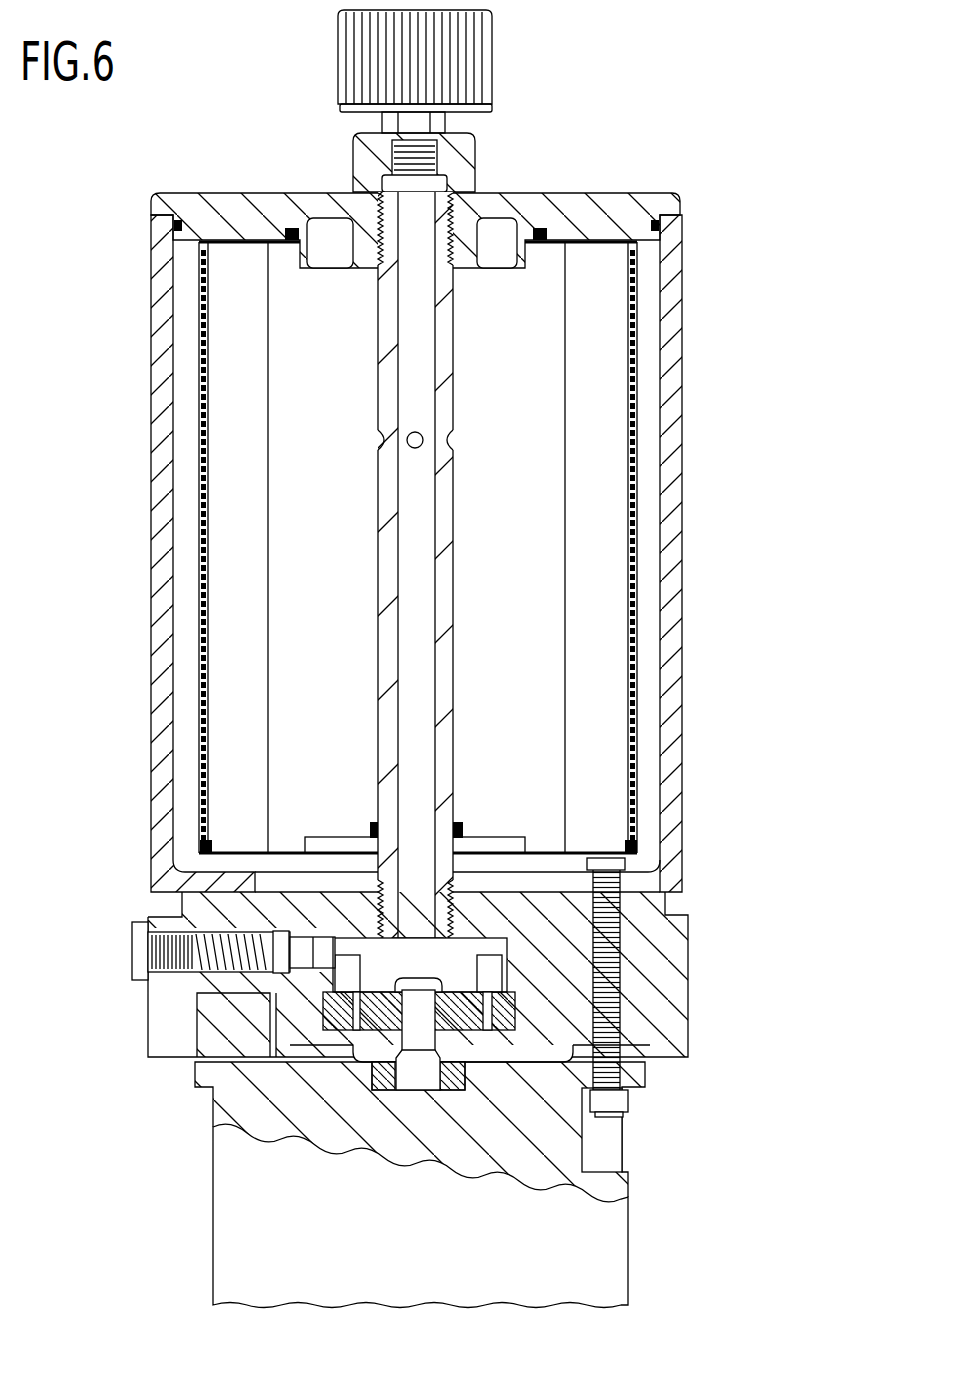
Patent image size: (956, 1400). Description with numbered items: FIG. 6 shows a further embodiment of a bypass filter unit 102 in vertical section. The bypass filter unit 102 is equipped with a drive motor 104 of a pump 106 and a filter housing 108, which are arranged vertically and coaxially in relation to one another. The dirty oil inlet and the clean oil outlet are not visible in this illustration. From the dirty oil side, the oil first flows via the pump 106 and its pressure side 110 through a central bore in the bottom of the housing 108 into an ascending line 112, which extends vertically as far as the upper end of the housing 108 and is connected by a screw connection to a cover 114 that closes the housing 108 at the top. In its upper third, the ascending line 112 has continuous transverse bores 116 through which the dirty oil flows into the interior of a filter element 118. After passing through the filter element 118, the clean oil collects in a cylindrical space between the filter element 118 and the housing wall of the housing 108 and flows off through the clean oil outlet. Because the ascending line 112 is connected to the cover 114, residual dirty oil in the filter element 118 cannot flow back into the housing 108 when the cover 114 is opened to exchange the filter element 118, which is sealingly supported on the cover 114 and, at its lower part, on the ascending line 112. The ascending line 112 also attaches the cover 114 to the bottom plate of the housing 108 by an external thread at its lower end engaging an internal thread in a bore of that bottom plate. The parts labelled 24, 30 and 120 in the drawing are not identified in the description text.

The valve stem 24 is at (418, 1058).
The valve plate 30 is at (512, 1020).
The bypass filter unit 102 is at (713, 543).
The drive motor 104 is at (615, 1262).
The pump 106 is at (224, 1046).
The filter housing 108 is at (148, 418).
The pressure side 110 is at (495, 968).
The ascending line 112 is at (445, 672).
The cover 114 is at (652, 207).
The transverse bores 116 is at (386, 437).
The filter element 118 is at (605, 380).
The fitting 120 is at (335, 977).